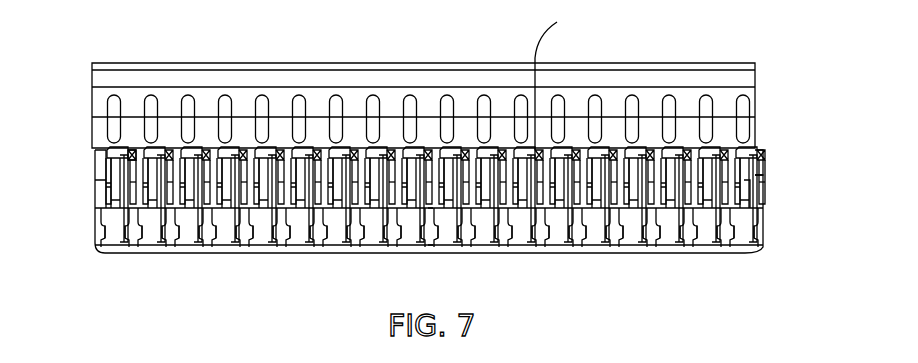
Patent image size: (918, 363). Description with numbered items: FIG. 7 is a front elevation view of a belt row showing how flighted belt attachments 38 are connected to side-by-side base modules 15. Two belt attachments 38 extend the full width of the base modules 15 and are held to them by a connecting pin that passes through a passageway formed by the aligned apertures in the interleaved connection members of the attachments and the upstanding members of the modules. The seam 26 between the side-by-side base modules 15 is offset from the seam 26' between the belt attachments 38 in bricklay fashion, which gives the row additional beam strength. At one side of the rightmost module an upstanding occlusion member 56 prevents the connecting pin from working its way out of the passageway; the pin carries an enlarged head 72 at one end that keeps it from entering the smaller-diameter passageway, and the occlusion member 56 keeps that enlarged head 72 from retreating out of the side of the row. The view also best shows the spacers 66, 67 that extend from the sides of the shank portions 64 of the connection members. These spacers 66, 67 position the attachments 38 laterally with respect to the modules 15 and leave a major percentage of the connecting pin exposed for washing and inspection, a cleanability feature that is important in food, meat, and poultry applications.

The base module 15 is at (428, 254).
The seam 26 is at (473, 247).
The seam 26' is at (564, 79).
The belt attachment 38 is at (333, 63).
The occlusion member 56 is at (752, 178).
The shank portion 64 is at (102, 182).
The spacer 66 is at (132, 160).
The spacer 67 is at (746, 186).
The enlarged head 72 is at (747, 162).